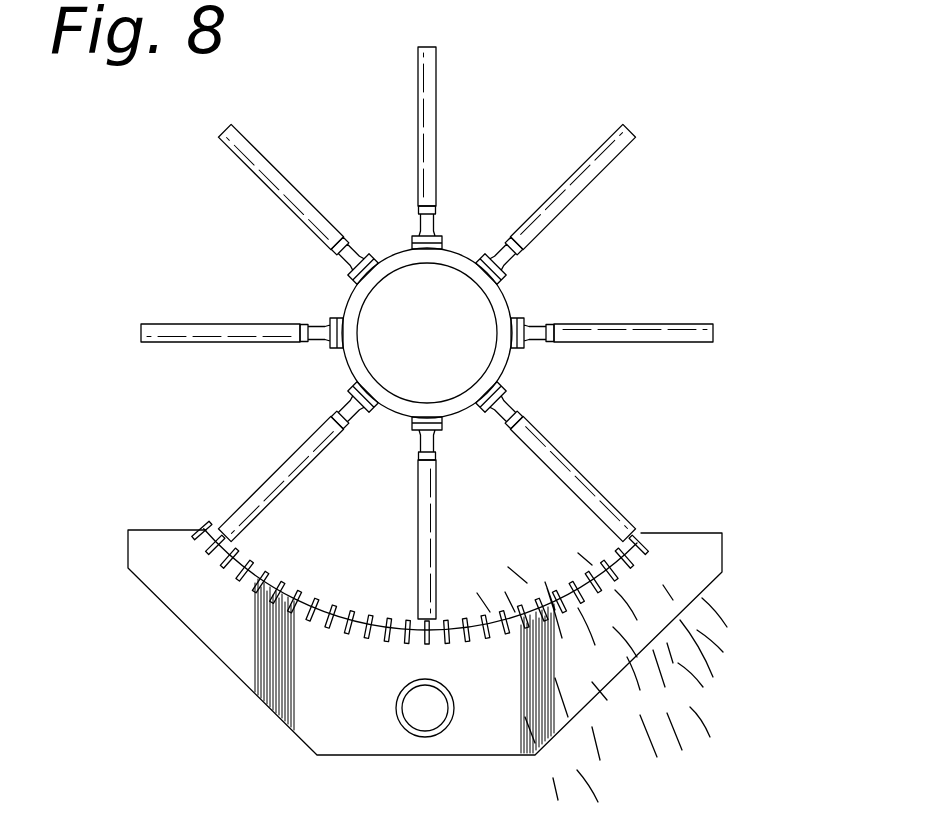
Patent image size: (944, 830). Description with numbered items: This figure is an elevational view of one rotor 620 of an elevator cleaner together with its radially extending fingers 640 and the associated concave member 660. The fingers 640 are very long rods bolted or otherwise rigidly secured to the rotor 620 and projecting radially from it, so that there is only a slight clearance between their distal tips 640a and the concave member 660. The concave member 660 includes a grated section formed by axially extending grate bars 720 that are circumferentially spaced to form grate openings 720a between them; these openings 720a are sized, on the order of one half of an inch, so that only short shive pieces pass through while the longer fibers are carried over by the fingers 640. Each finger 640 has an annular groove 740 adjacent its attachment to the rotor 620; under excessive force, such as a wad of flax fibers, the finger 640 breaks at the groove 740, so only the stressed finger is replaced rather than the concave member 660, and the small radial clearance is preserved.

The rotor 620 is at (455, 268).
The fingers 640 is at (588, 156).
The distal tips 640a is at (632, 137).
The annular groove 740 is at (410, 243).
The grate bars 720 is at (642, 530).
The grate openings 720a is at (455, 624).
The concave member 660 is at (340, 738).